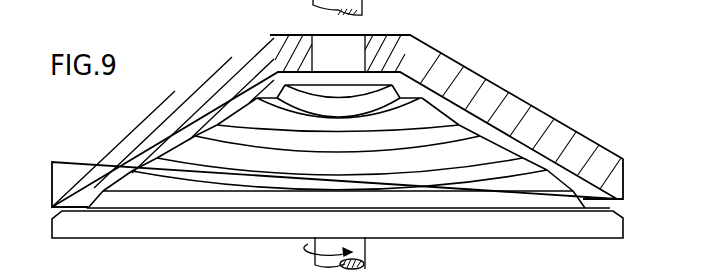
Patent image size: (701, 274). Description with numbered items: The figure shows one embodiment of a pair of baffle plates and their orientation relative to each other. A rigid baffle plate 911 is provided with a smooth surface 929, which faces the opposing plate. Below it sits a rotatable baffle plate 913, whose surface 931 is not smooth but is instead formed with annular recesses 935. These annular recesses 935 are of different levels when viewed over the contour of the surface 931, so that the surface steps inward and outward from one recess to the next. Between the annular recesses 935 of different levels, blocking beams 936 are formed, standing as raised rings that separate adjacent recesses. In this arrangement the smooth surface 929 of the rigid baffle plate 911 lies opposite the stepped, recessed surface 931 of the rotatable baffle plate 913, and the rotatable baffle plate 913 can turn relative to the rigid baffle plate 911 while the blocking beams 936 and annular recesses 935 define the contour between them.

The rigid baffle plate 911 is at (417, 50).
The blocking beams 936 is at (422, 108).
The annular recesses 935 is at (468, 132).
The surface 931 is at (497, 140).
The smooth surface 929 is at (540, 150).
The rotatable baffle plate 913 is at (563, 231).